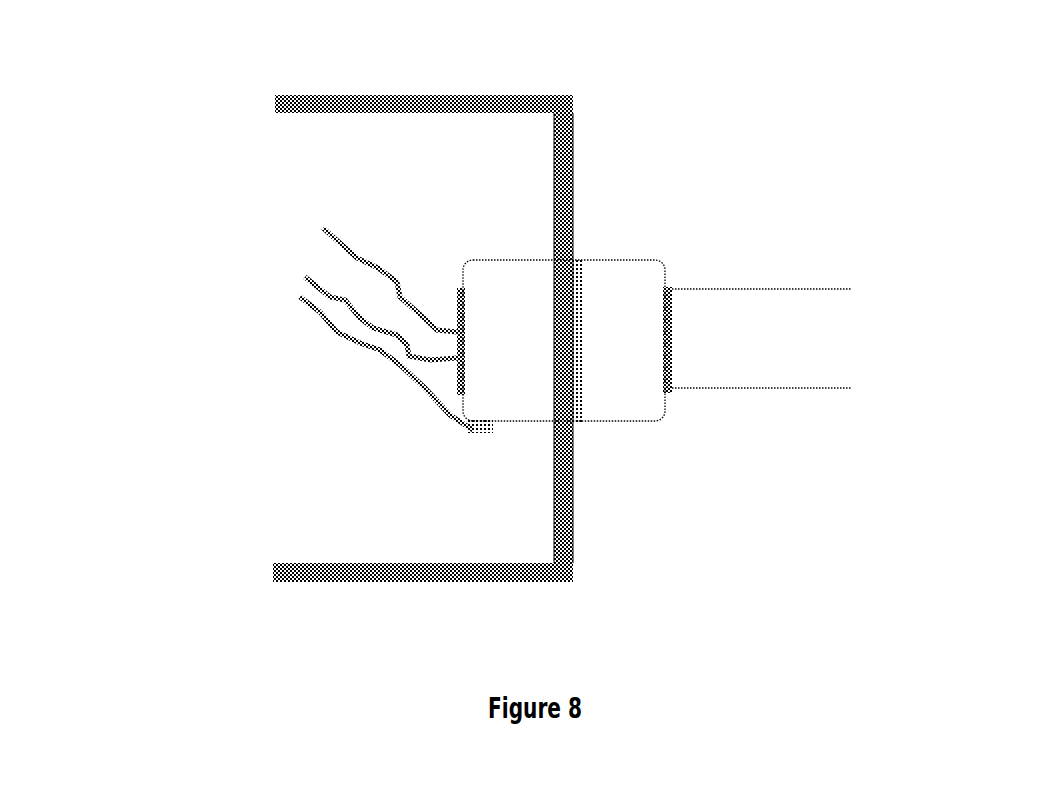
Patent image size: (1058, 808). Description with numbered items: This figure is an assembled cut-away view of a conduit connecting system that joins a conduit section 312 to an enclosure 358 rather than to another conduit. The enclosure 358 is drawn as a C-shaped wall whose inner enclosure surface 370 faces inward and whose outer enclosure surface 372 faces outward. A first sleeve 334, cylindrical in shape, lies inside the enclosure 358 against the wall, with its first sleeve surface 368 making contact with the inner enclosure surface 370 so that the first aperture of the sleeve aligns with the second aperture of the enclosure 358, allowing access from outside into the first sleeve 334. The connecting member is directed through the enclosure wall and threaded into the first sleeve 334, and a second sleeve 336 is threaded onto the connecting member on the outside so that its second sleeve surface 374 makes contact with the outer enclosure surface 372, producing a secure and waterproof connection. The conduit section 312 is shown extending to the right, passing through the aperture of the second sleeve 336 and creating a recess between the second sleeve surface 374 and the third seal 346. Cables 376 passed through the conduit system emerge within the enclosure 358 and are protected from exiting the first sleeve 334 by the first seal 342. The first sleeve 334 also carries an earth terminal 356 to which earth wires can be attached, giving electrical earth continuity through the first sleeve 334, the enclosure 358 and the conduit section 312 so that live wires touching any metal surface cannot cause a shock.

The conduit section 312 is at (770, 372).
The first sleeve 334 is at (522, 407).
The second sleeve 336 is at (628, 398).
The first seal 342 is at (457, 384).
The third seal 346 is at (672, 305).
The earth terminal 356 is at (457, 438).
The enclosure 358 is at (562, 520).
The first sleeve surface 368 is at (553, 290).
The inner enclosure surface 370 is at (553, 240).
The outer enclosure surface 372 is at (572, 203).
The second sleeve surface 374 is at (572, 278).
The cables 376 is at (375, 332).